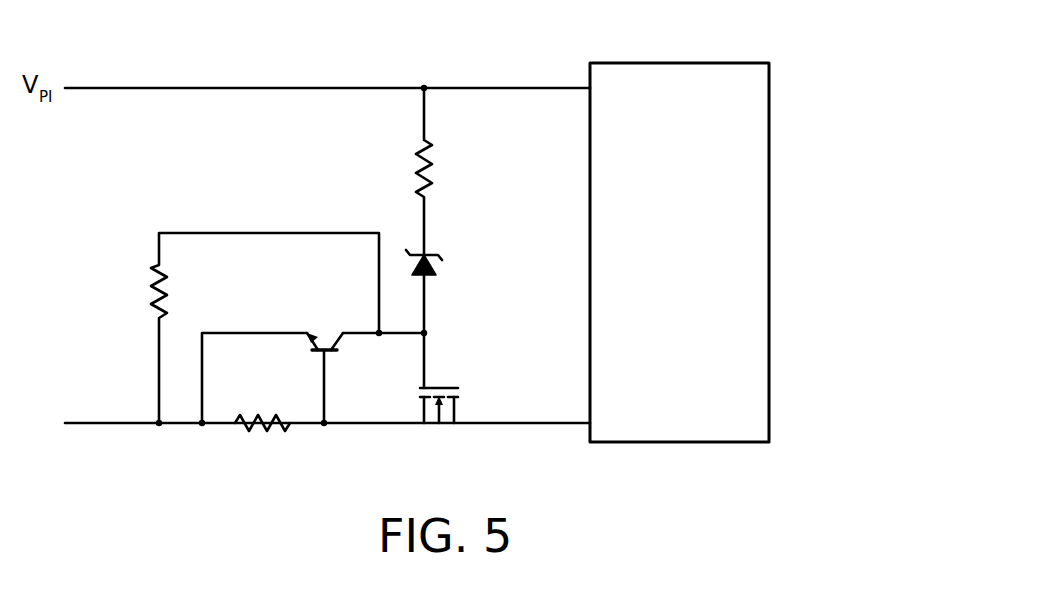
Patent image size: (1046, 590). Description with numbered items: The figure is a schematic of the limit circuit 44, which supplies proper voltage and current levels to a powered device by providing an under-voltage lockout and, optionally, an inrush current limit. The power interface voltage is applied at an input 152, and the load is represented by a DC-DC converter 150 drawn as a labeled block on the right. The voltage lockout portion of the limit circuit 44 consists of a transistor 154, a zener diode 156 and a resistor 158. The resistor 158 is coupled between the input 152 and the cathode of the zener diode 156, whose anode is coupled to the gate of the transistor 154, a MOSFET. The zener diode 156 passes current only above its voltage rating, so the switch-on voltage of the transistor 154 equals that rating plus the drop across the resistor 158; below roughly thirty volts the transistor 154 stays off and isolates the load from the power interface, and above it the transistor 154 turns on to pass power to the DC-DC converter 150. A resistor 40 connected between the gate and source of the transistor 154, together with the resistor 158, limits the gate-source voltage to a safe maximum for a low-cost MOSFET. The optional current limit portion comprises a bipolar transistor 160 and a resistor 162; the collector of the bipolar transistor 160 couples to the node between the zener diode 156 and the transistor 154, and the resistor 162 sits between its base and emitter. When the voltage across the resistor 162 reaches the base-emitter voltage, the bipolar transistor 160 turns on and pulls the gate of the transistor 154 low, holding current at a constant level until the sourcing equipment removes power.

The limit circuit 44 is at (829, 24).
The DC-DC converter 150 is at (792, 115).
The input 152 is at (77, 72).
The transistor 154 is at (459, 367).
The zener diode 156 is at (457, 258).
The resistor 158 is at (454, 159).
The bipolar transistor 160 is at (324, 319).
The resistor 162 is at (271, 392).
The resistor 40 is at (130, 289).